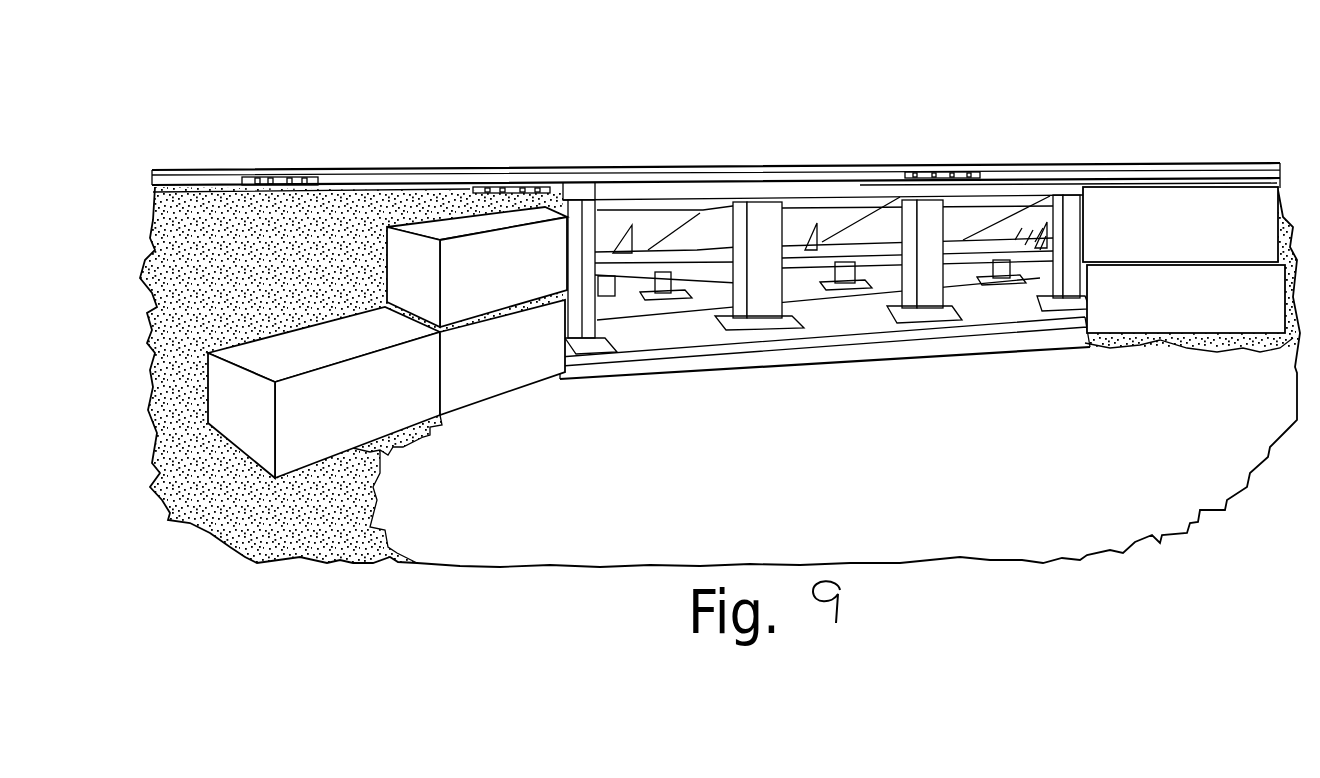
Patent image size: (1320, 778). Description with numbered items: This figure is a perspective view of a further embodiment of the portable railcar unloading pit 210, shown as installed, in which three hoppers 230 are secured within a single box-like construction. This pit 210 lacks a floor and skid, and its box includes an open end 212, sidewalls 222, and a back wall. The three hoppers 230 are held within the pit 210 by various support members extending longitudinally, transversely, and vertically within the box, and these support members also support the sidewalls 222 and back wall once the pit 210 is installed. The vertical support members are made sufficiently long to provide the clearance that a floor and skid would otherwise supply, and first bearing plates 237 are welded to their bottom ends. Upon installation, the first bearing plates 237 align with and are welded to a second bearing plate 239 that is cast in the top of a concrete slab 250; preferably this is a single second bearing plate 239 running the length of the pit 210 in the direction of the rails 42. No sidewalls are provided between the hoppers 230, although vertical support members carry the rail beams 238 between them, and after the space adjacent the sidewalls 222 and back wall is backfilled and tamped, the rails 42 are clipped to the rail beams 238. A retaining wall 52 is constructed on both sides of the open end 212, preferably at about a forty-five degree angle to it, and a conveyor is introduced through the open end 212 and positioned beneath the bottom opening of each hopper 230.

The rails 42 is at (335, 168).
The retaining wall 52 is at (512, 294).
The portable railcar unloading pit 210 is at (628, 190).
The open end 212 is at (600, 233).
The sidewalls 222 is at (1043, 215).
The hoppers 230 is at (833, 220).
The first bearing plates 237 is at (948, 308).
The rail beams 238 is at (700, 192).
The second bearing plate 239 is at (683, 330).
The concrete slab 250 is at (1032, 338).